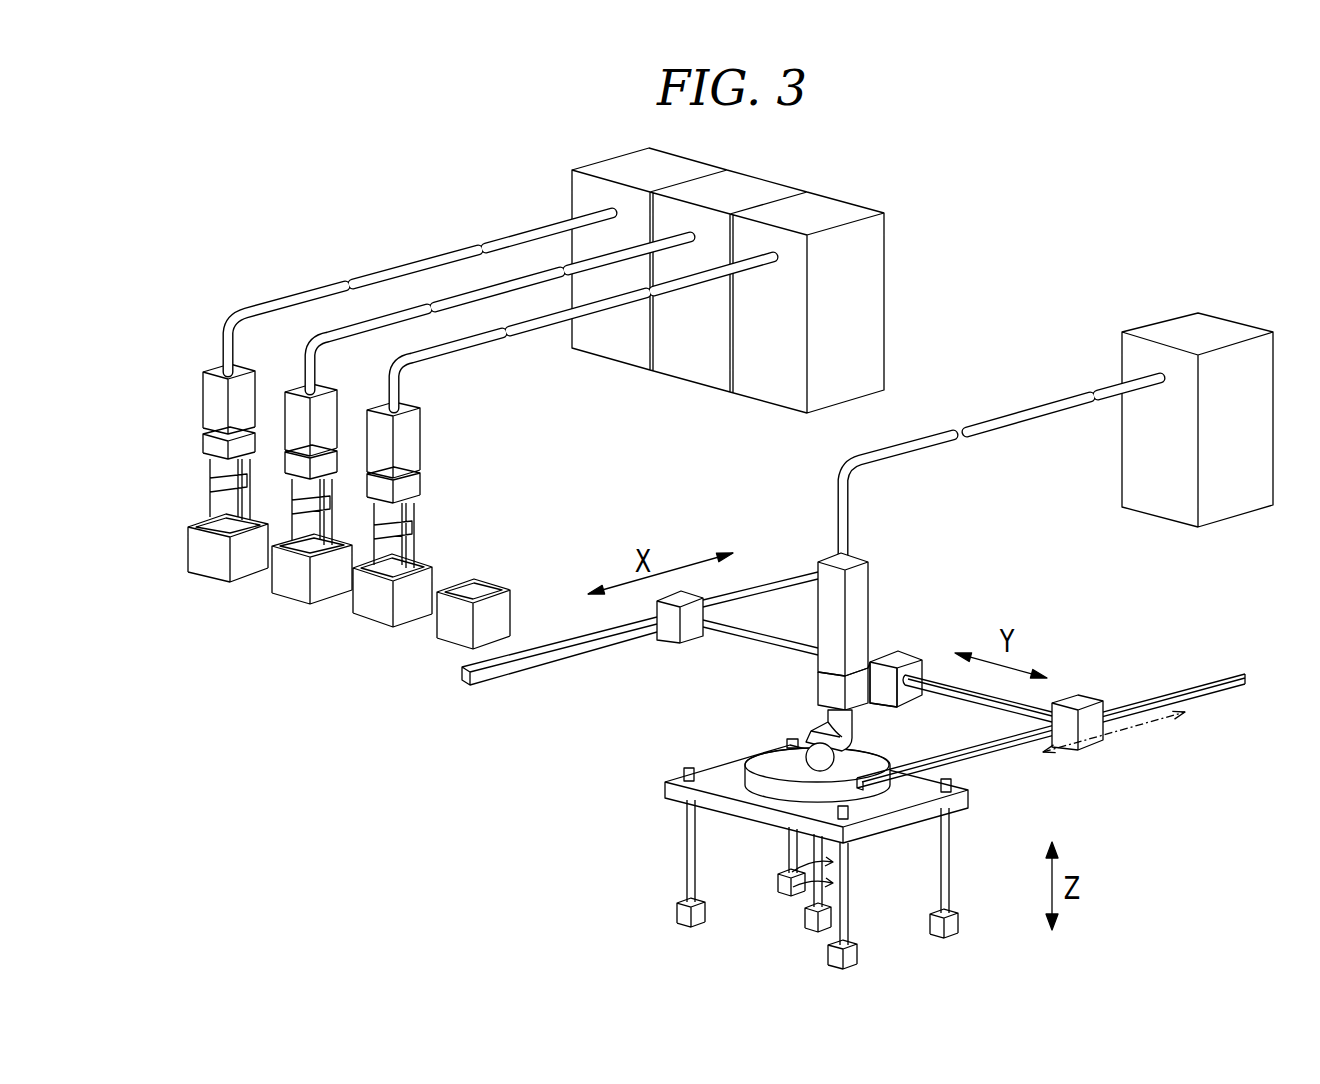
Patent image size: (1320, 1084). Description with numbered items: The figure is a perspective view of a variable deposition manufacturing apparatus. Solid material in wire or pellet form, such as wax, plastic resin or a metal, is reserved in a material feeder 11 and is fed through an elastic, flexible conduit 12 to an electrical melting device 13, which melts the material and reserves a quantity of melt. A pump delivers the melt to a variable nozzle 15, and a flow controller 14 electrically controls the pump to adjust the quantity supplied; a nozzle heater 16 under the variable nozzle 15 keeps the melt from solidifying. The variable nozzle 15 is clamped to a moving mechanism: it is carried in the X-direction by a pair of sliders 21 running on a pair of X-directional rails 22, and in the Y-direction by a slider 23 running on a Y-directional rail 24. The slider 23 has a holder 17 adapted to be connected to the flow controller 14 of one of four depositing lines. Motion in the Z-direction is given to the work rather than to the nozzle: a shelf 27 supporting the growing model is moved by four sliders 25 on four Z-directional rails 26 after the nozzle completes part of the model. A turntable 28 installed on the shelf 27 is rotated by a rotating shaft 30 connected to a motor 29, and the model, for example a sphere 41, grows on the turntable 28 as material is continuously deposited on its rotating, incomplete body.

The material feeder 11 is at (1190, 328).
The conduit 12 is at (1030, 410).
The electrical melting device 13 is at (858, 588).
The flow controller 14 is at (827, 692).
The variable nozzle 15 is at (858, 740).
The nozzle heater 16 is at (505, 612).
The holder 17 is at (872, 662).
The sliders 21 is at (668, 598).
The X-directional rails 22 is at (767, 587).
The slider 23 is at (913, 657).
The Y-directional rail 24 is at (992, 705).
The sliders 25 is at (955, 927).
The Z-directional rails 26 is at (947, 873).
The shelf 27 is at (672, 787).
The turntable 28 is at (757, 763).
The motor 29 is at (805, 917).
The rotating shaft 30 is at (820, 855).
The sphere 41 is at (808, 744).